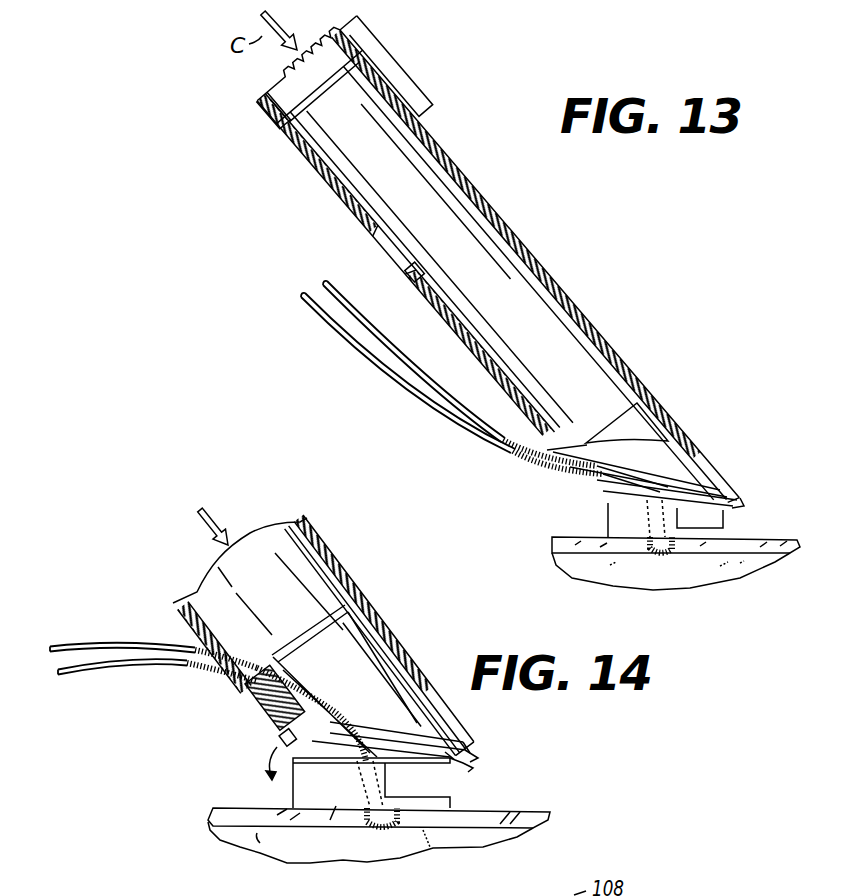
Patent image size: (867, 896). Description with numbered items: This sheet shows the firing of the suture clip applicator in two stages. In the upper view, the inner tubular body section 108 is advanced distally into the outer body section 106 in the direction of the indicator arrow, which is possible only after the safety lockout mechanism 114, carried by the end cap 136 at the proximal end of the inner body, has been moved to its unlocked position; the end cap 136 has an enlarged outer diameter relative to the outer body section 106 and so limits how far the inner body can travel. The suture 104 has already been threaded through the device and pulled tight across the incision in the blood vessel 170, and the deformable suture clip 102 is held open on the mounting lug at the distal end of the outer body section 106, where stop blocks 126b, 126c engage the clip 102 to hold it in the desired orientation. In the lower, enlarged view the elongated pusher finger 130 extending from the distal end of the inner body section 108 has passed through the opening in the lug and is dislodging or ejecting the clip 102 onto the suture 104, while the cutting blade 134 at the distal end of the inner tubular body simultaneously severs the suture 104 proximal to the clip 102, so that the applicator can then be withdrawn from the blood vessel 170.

In FIG. 13, the suture clip 102 is at (620, 518).
In FIG. 14, the suture clip 102 is at (333, 787).
In FIG. 13, the suture 104 is at (418, 380).
In FIG. 14, the suture 104 is at (102, 642).
In FIG. 13, the outer body section 106 is at (508, 232).
In FIG. 14, the outer body section 106 is at (345, 572).
In FIG. 13, the inner tubular body section 108 is at (523, 317).
In FIG. 14, the inner tubular body section 108 is at (263, 543).
In FIG. 13, the safety lockout mechanism 114 is at (407, 88).
In FIG. 14, the stop block 126b is at (478, 767).
In FIG. 14, the stop block 126c is at (282, 736).
In FIG. 14, the pusher finger 130 is at (320, 712).
In FIG. 14, the cutting blade 134 is at (222, 680).
In FIG. 13, the end cap 136 is at (280, 110).
In FIG. 13, the blood vessel 170 is at (720, 550).
In FIG. 14, the blood vessel 170 is at (298, 810).